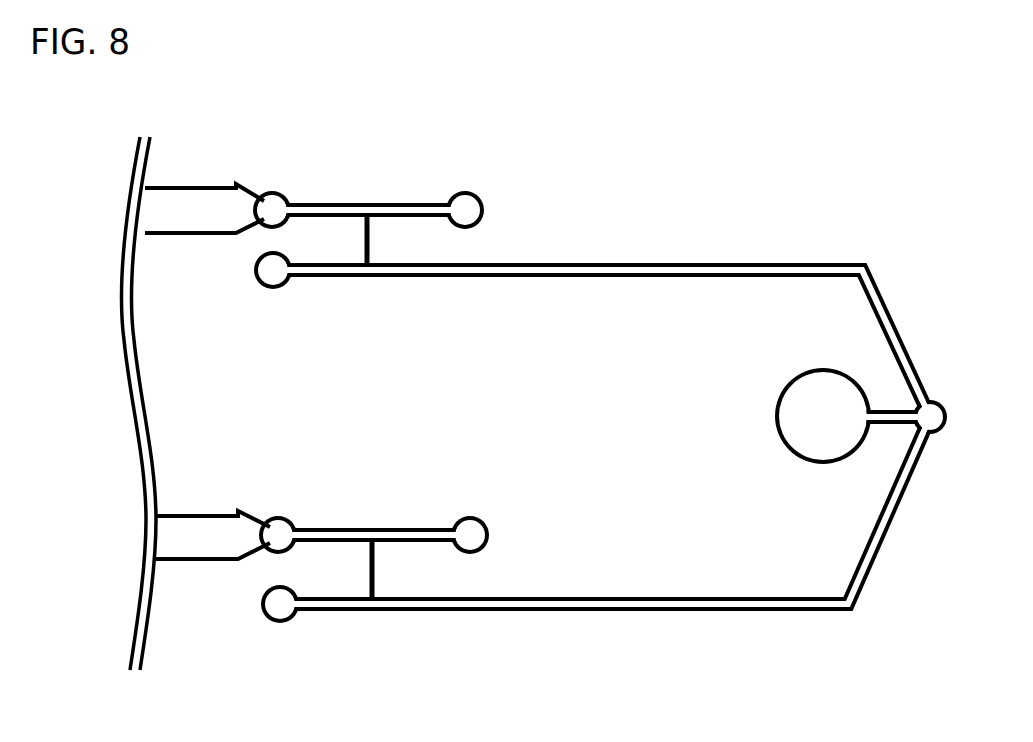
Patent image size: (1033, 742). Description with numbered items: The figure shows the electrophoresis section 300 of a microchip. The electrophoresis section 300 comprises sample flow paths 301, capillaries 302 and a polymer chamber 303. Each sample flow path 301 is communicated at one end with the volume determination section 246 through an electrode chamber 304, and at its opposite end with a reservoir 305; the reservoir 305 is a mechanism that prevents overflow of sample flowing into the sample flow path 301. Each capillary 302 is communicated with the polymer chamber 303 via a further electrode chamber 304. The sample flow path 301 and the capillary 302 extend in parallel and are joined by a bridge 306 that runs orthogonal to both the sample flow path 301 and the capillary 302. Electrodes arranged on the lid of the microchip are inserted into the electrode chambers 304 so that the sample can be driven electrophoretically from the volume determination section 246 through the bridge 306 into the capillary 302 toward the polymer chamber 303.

The volume determination section 246 is at (118, 208).
The electrophoresis section 300 is at (885, 127).
The sample flow path 301 is at (382, 204).
The capillary 302 is at (528, 277).
The polymer chamber 303 is at (802, 414).
The electrode chamber 304 is at (283, 200).
The reservoir 305 is at (468, 210).
The bridge 306 is at (369, 240).